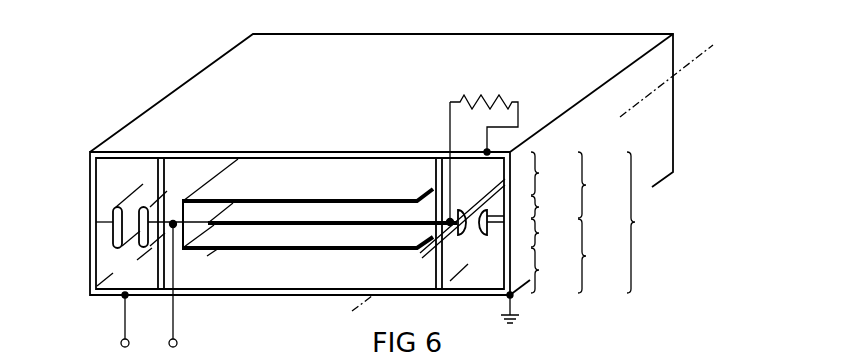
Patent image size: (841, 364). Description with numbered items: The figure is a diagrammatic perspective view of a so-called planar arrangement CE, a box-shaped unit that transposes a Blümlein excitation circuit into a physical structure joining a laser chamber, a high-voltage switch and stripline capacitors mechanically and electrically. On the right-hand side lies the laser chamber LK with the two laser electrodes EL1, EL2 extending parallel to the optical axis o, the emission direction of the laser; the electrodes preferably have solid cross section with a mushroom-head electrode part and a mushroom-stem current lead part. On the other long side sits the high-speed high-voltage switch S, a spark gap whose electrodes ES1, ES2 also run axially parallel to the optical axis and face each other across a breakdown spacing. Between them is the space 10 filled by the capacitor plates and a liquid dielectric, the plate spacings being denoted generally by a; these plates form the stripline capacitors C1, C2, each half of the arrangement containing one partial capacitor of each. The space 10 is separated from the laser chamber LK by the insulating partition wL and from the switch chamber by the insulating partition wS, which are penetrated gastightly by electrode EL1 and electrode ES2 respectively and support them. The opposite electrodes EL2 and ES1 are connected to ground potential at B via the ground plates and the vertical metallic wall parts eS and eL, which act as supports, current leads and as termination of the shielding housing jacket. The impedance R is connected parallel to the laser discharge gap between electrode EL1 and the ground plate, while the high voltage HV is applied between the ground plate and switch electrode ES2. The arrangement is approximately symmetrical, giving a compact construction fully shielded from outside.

The space filled by plates and liquid dielectric 10 is at (404, 229).
The plate distance a is at (313, 187).
The high-voltage switch S is at (124, 267).
The switch electrode ES1 is at (110, 217).
The switch electrode ES2 is at (145, 207).
The vertical metallic wall part on the switch side eS is at (89, 224).
The insulating partition on the switch side wS is at (165, 263).
The high voltage HV is at (149, 288).
The laser chamber LK is at (466, 224).
The insulating partition on the laser side wL is at (436, 172).
The impedance R is at (473, 99).
The laser electrode EL1 is at (428, 249).
The laser electrode EL2 is at (482, 236).
The vertical metallic wall part on the laser side eL is at (517, 152).
The ground potential B is at (515, 310).
The first stripline capacitor C1 is at (548, 222).
The second stripline capacitor C2 is at (548, 224).
The total planar capacitor stack CE is at (618, 182).
The optical axis o is at (533, 181).